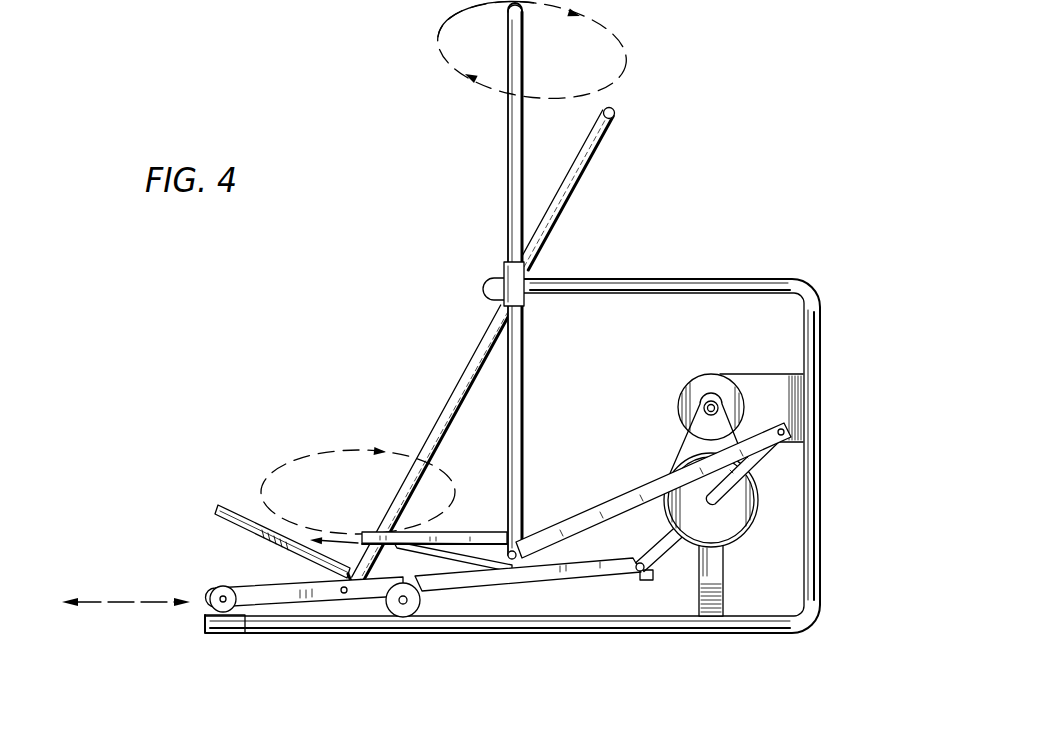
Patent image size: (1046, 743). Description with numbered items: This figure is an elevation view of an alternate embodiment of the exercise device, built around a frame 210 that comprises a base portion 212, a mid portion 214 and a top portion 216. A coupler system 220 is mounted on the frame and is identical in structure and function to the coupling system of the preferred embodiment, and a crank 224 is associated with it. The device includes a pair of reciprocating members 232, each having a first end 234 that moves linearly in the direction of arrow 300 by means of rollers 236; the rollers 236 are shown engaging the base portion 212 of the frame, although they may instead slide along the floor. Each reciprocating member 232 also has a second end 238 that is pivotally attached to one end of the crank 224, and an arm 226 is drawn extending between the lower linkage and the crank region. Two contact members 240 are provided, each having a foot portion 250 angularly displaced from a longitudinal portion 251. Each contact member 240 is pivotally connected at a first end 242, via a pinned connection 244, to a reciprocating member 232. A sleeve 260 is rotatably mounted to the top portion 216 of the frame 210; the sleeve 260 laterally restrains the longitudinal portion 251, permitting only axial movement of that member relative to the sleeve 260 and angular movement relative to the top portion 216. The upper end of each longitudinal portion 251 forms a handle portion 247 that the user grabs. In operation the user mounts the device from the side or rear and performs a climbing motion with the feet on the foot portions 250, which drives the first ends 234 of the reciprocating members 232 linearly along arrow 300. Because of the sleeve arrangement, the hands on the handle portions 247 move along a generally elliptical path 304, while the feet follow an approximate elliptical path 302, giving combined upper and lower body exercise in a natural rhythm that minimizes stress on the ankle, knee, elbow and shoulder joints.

The frame 210 is at (832, 384).
The base portion 212 is at (573, 635).
The mid portion 214 is at (822, 518).
The top portion 216 is at (695, 277).
The coupler system 220 is at (766, 536).
The crank 224 is at (752, 460).
The connecting arm 226 is at (670, 471).
The reciprocating member 232 is at (323, 609).
The first end 234 is at (248, 634).
The roller 236 is at (207, 608).
The second end 238 is at (769, 427).
The contact member 240 is at (449, 388).
The first end 242 is at (343, 584).
The pinned connection 244 is at (347, 594).
The handle portion 247 is at (438, 36).
The foot portion 250 is at (284, 532).
The longitudinal portion 251 is at (507, 154).
The sleeve 260 is at (513, 270).
The arrow 300 is at (100, 600).
The elliptical path 302 is at (364, 448).
The elliptical path 304 is at (626, 48).